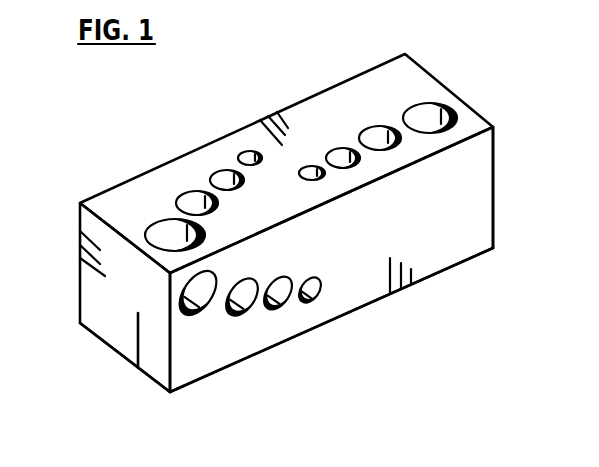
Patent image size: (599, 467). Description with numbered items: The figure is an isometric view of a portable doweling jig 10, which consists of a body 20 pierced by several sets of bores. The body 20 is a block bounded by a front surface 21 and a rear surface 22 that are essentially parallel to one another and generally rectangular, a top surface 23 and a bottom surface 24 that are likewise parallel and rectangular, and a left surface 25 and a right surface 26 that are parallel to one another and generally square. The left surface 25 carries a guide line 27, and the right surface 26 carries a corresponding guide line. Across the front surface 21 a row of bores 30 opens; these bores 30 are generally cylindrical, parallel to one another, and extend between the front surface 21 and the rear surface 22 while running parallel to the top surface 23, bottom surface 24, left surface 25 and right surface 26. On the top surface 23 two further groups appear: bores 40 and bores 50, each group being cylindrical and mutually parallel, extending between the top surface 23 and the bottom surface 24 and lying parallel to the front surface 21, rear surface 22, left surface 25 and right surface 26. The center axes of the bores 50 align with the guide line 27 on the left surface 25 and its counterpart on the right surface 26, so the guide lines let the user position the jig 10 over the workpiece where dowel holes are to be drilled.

The portable doweling jig 10 is at (291, 237).
The body 20 is at (289, 246).
The front surface 21 is at (473, 190).
The rear surface 22 is at (79, 283).
The top surface 23 is at (417, 80).
The bottom surface 24 is at (472, 264).
The left surface 25 is at (103, 320).
The right surface 26 is at (496, 163).
The guide line 27 is at (127, 352).
The bores 30 is at (188, 318).
The bores 40 is at (242, 152).
The bores 50 is at (307, 167).